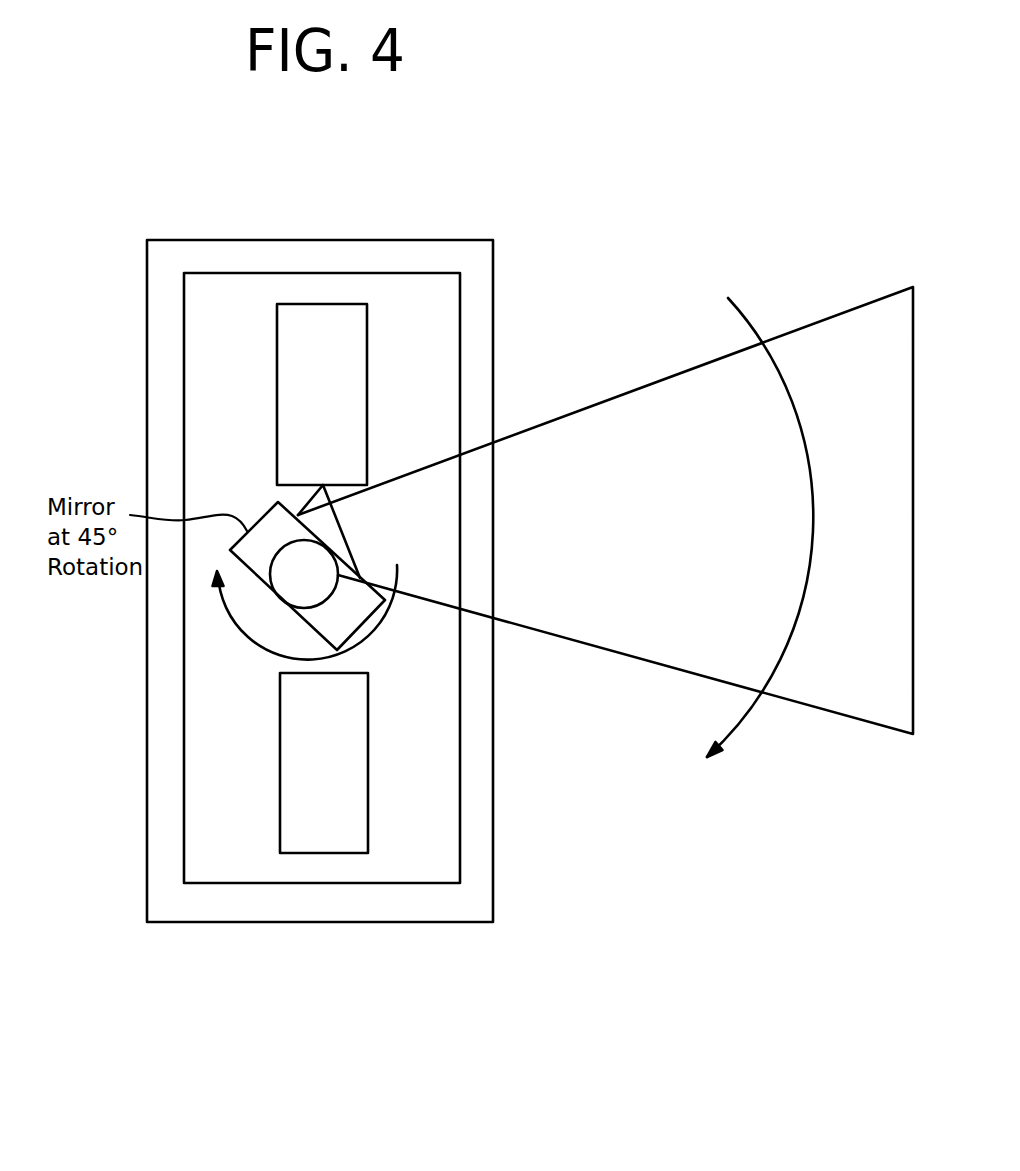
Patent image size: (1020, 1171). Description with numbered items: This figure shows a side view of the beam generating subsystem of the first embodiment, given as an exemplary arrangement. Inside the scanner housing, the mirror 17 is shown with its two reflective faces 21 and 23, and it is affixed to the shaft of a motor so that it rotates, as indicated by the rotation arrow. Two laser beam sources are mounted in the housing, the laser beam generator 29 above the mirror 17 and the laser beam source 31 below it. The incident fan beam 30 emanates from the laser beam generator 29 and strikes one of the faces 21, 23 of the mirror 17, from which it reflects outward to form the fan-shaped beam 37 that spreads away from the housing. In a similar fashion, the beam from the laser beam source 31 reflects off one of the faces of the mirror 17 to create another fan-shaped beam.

The mirror 17 is at (223, 603).
The face of mirror 21 is at (322, 557).
The face of mirror 23 is at (257, 583).
The laser beam source 29 is at (340, 347).
The incident fan beam 30 is at (303, 492).
The laser beam source 31 is at (352, 830).
The beam 37 is at (652, 603).